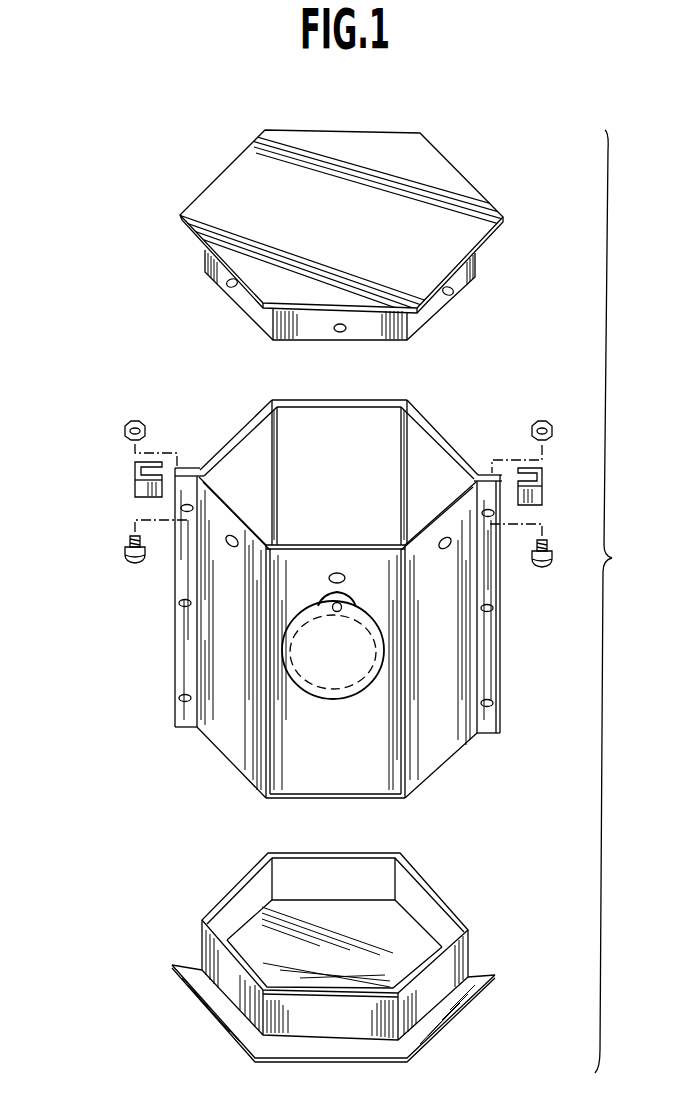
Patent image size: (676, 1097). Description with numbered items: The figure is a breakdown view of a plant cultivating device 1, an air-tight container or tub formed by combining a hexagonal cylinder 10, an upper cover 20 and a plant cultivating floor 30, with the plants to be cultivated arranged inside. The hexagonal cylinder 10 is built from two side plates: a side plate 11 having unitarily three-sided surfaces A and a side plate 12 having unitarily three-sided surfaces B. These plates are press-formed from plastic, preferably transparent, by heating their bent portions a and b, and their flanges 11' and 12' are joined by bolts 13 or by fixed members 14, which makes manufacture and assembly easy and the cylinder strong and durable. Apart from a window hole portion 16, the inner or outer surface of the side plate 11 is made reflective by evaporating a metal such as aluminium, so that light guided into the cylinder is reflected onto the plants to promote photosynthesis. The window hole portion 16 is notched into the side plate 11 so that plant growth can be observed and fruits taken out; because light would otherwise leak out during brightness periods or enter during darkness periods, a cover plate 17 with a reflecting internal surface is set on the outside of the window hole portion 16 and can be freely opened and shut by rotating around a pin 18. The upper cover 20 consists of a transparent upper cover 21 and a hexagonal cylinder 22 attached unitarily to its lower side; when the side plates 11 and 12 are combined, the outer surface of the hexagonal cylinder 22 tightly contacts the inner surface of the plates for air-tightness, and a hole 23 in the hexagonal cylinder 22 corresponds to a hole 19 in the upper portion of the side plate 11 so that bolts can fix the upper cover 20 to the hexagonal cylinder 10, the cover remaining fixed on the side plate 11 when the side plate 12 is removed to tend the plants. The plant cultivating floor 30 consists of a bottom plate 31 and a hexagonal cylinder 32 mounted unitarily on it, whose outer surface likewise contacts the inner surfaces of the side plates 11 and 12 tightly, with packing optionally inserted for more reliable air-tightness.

The plant cultivating device 1 is at (613, 601).
The hexagonal cylinder 10 is at (382, 596).
The side plate 11 is at (339, 763).
The flange 11' is at (345, 750).
The side plate 12 is at (339, 435).
The flange 12' is at (345, 446).
The bolt 13 is at (133, 563).
The fixed member 14 is at (134, 473).
The window hole portion 16 is at (342, 686).
The cover plate 17 is at (303, 624).
The pin 18 is at (347, 608).
The hole 19 is at (232, 546).
The upper cover 20 is at (366, 253).
The transparent upper cover 21 is at (213, 193).
The hexagonal cylinder 22 is at (253, 313).
The hole 23 is at (225, 290).
The plant cultivating floor 30 is at (355, 957).
The bottom plate 31 is at (450, 1022).
The hexagonal cylinder 32 is at (430, 908).
The bent portion a is at (198, 650).
The bent portion b is at (200, 468).
The three-sided surfaces A is at (333, 741).
The three-sided surfaces B is at (339, 474).